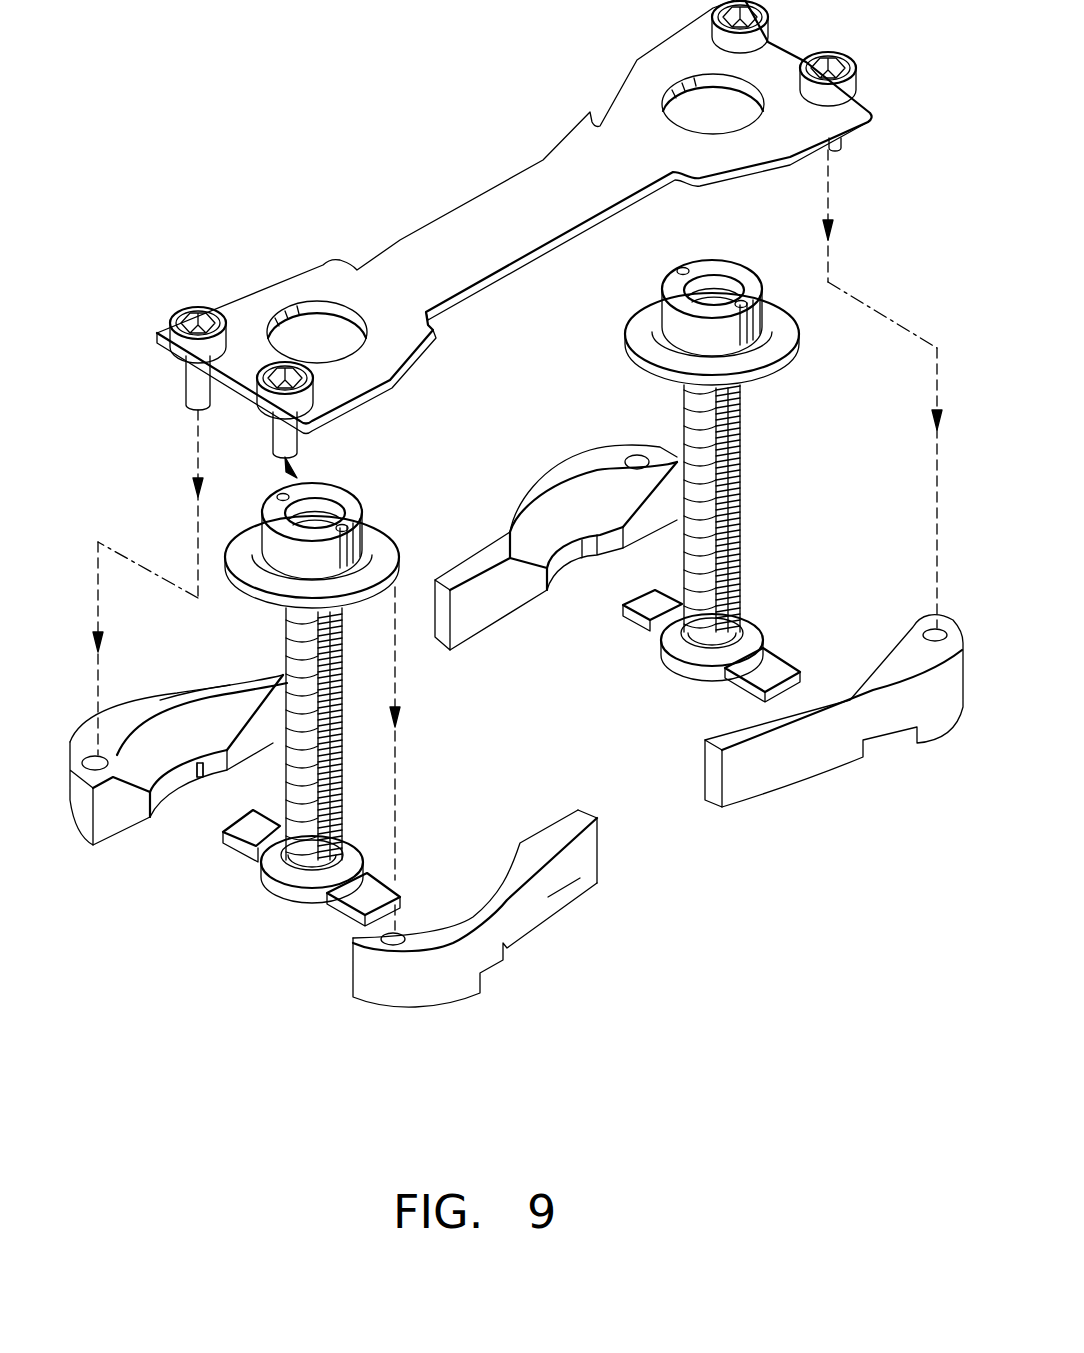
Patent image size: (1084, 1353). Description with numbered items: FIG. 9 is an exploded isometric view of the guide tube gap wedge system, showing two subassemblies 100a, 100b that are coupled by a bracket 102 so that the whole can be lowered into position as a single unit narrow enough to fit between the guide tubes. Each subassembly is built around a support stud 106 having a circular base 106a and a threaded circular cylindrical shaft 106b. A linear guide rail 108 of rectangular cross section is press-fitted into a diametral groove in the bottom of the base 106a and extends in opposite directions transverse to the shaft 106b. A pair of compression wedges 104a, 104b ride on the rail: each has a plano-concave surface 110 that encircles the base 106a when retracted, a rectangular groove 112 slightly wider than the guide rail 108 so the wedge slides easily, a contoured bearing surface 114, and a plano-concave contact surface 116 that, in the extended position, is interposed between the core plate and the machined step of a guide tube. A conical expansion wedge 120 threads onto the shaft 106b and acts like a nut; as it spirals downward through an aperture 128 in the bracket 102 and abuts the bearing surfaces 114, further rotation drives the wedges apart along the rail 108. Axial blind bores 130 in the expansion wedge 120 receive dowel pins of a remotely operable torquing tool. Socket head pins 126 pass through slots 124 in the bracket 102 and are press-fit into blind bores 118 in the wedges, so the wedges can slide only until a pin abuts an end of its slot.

The subassembly 100a is at (184, 925).
The subassembly 100b is at (788, 456).
The bracket 102 is at (505, 210).
The compression wedge 104a is at (563, 467).
The compression wedge 104b is at (732, 728).
The support stud 106 is at (742, 514).
The circular base 106a is at (672, 663).
The circular cylindrical shaft 106b is at (741, 563).
The linear guide rail 108 is at (773, 667).
The plano-concave surface 110 is at (212, 768).
The groove 112 is at (892, 750).
The bearing surface 114 is at (207, 720).
The contact surface 116 is at (548, 897).
The blind bore 118 is at (630, 452).
The expansion wedge 120 is at (723, 260).
The slot 124 is at (870, 97).
The socket head pin 126 is at (845, 62).
The plate opening 128 is at (323, 312).
The axial blind bores 130 is at (718, 273).